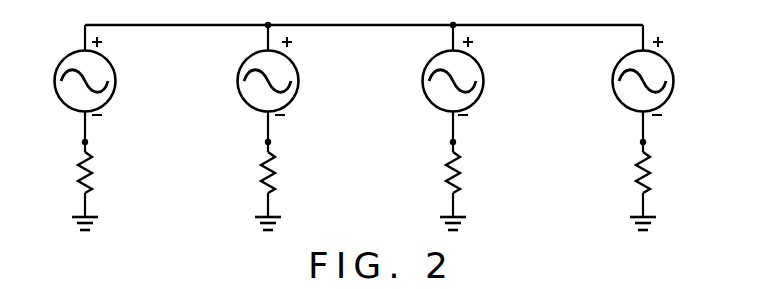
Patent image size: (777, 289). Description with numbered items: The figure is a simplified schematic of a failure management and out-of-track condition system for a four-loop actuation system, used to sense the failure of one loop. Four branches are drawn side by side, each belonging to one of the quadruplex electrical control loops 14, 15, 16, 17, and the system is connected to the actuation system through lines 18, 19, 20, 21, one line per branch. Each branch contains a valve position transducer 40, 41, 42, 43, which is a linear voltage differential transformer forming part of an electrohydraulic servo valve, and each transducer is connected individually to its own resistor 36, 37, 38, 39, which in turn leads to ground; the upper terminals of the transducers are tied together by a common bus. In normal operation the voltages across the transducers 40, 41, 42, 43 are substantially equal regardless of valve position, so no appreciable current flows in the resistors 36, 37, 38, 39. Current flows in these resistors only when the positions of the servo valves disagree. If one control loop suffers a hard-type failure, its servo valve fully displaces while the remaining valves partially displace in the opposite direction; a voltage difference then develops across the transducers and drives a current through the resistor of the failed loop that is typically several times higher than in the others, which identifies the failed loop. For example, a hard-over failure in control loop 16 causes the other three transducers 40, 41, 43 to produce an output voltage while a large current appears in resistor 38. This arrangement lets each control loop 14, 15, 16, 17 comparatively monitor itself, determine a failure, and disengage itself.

The electrical control loop 14 is at (487, 153).
The electrical control loop 15 is at (116, 152).
The electrical control loop 16 is at (297, 153).
The electrical control loop 17 is at (671, 152).
The line 18 is at (85, 126).
The line 19 is at (453, 126).
The line 20 is at (268, 126).
The line 21 is at (643, 126).
The resistor 36 is at (91, 170).
The resistor 37 is at (459, 170).
The resistor 38 is at (274, 170).
The resistor 39 is at (649, 170).
The valve position transducer 40 is at (104, 69).
The valve position transducer 41 is at (470, 67).
The valve position transducer 42 is at (286, 71).
The valve position transducer 43 is at (660, 68).